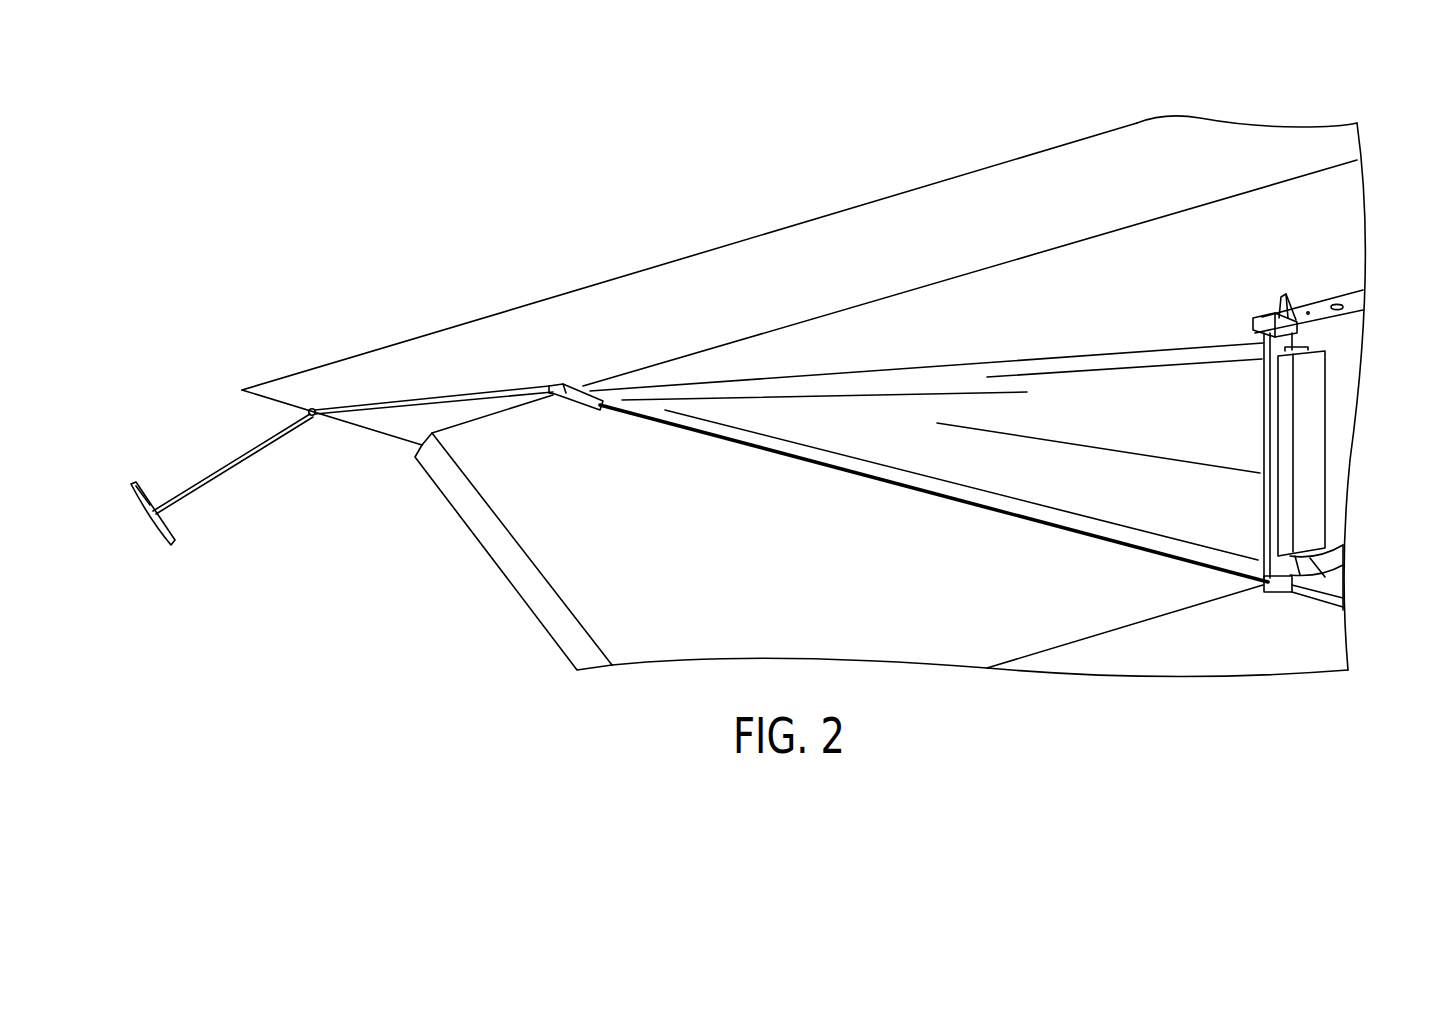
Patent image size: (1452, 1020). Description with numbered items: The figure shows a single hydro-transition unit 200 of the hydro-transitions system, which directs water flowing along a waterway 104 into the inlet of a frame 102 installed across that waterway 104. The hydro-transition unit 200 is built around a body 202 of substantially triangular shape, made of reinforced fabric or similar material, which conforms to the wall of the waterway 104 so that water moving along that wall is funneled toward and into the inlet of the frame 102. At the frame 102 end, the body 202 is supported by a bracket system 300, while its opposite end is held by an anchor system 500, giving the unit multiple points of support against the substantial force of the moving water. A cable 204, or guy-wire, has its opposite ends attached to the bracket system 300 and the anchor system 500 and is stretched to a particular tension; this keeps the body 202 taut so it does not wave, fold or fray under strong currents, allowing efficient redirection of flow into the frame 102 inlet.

The frame 102 is at (1338, 330).
The waterway 104 is at (1062, 657).
The hydro-transition unit 200 is at (990, 300).
The body 202 is at (923, 378).
The cable 204 is at (758, 447).
The bracket system 300 is at (1258, 285).
The anchor system 500 is at (366, 368).